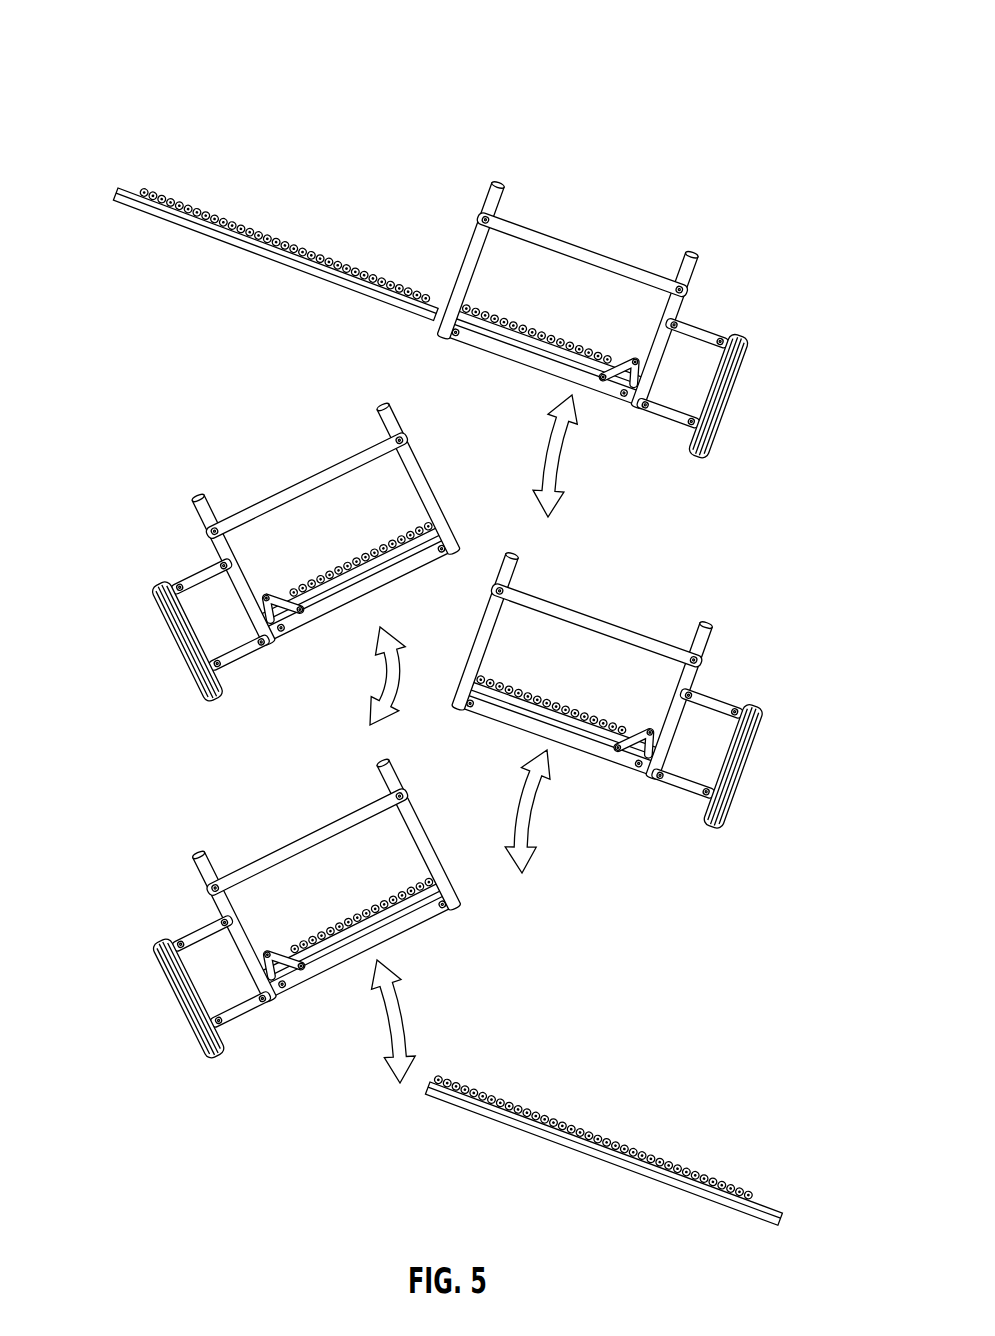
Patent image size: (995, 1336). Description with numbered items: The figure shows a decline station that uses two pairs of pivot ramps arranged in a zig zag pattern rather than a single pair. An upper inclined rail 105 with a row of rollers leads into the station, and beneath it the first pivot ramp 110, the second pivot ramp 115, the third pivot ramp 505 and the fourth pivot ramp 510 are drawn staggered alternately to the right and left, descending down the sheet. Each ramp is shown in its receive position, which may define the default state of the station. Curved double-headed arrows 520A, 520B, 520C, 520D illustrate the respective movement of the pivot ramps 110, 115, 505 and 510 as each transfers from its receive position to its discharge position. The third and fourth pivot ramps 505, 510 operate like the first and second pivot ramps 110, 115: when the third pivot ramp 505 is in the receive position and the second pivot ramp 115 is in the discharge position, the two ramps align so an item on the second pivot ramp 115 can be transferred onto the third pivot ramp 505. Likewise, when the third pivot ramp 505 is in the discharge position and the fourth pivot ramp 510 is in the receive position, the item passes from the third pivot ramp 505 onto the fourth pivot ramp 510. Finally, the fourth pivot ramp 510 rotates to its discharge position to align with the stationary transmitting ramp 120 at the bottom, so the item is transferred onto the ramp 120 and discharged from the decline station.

The first conveyor rail 105 is at (283, 265).
The first pivot ramp 110 is at (552, 376).
The second pivot ramp 115 is at (243, 657).
The stationary transmitting ramp 120 is at (658, 1181).
The third pivot ramp 505 is at (554, 743).
The fourth pivot ramp 510 is at (243, 1013).
The arrow 520A is at (559, 476).
The arrow 520B is at (381, 697).
The arrow 520C is at (516, 818).
The arrow 520D is at (392, 1047).